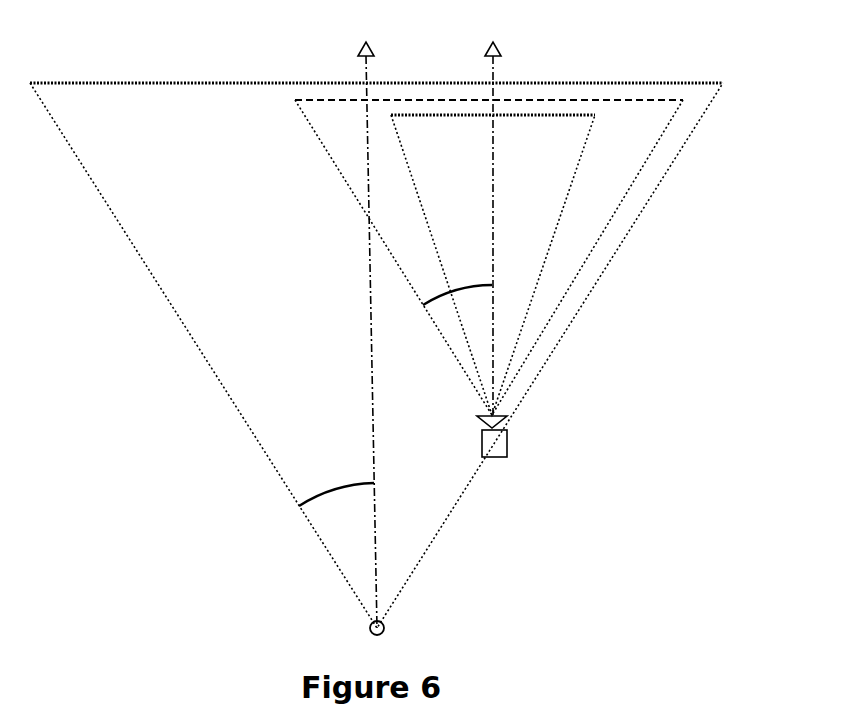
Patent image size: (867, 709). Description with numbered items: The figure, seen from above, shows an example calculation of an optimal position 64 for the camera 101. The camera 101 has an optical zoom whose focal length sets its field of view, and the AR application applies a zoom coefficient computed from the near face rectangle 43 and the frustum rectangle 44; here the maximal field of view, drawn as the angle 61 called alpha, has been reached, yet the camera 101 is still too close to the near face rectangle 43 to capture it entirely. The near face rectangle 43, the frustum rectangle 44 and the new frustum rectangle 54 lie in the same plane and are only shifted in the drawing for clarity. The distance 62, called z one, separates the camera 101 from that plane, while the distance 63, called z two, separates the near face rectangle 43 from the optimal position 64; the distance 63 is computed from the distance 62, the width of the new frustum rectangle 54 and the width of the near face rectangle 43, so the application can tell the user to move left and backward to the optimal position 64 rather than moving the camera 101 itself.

The near face rectangle 43 is at (183, 83).
The new frustum rectangle 54 is at (560, 100).
The frustum rectangle 44 is at (525, 118).
The distance z2 63 is at (370, 310).
The distance z1 62 is at (493, 212).
The angle α (maximum field of view angle) 61 is at (423, 305).
The camera 101 is at (507, 445).
The optimal position 64 is at (368, 627).